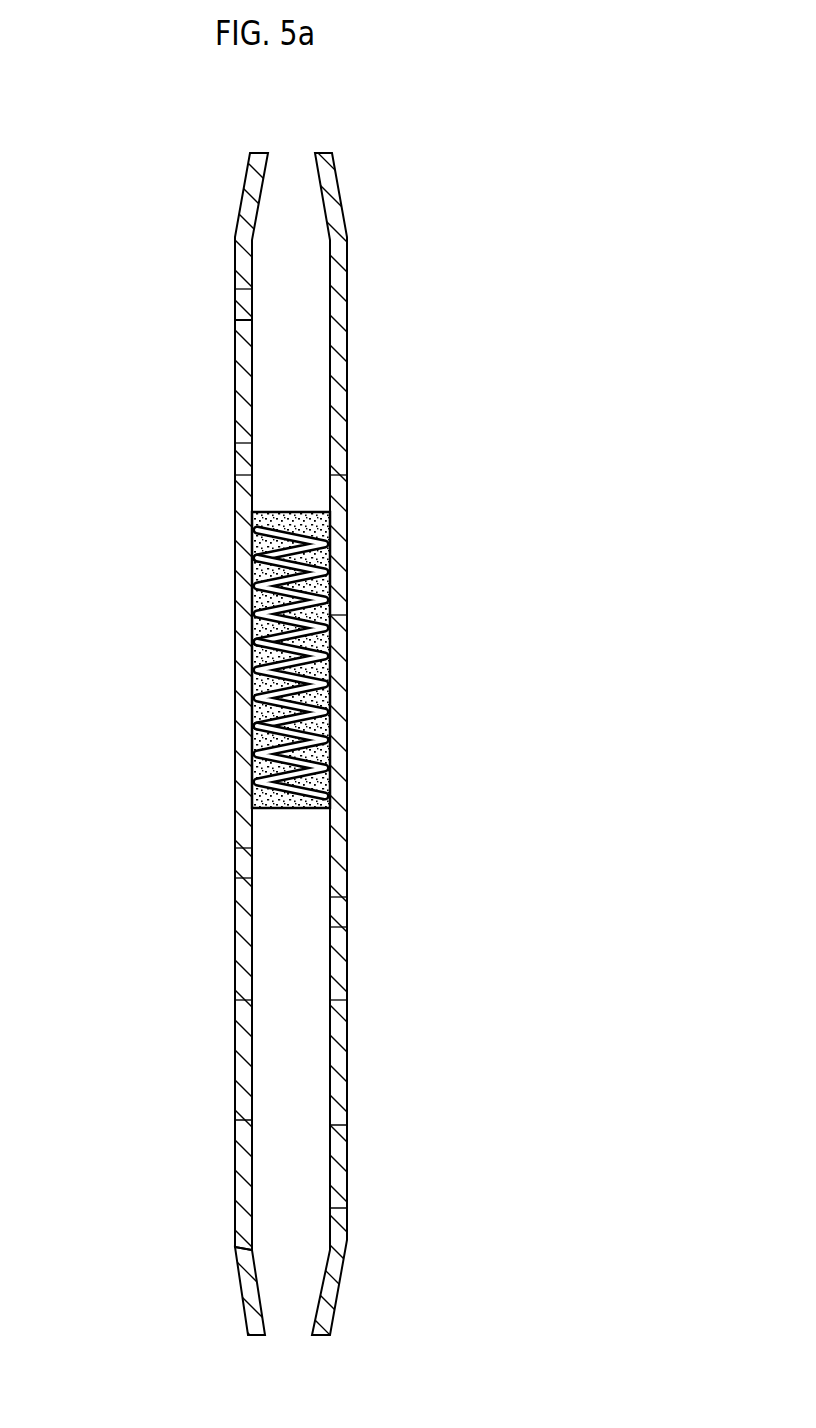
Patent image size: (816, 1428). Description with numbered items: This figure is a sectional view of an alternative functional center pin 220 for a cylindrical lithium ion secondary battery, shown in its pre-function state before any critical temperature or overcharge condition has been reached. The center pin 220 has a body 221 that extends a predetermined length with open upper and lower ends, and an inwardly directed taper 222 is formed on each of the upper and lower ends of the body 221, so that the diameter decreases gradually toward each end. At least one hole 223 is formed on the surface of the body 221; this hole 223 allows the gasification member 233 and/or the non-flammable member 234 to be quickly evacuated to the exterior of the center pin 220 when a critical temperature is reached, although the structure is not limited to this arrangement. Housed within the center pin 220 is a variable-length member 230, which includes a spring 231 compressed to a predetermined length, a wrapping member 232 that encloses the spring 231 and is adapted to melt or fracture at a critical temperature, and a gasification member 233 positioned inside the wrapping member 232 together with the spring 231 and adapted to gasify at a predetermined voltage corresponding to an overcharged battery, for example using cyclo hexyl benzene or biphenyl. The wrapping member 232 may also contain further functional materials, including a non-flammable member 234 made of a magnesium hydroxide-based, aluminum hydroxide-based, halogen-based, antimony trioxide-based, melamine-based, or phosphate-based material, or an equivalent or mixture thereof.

The center pin 220 is at (365, 300).
The body 221 is at (242, 936).
The inwardly directed taper 222 is at (248, 1293).
The hole 223 is at (245, 306).
The variable-length member 230 is at (258, 500).
The spring 231 is at (252, 526).
The wrapping member 232 is at (254, 624).
The gasification member 233 is at (254, 681).
The non-flammable member 234 is at (254, 681).